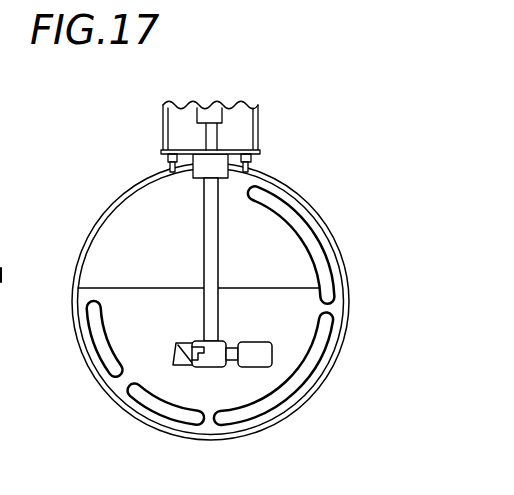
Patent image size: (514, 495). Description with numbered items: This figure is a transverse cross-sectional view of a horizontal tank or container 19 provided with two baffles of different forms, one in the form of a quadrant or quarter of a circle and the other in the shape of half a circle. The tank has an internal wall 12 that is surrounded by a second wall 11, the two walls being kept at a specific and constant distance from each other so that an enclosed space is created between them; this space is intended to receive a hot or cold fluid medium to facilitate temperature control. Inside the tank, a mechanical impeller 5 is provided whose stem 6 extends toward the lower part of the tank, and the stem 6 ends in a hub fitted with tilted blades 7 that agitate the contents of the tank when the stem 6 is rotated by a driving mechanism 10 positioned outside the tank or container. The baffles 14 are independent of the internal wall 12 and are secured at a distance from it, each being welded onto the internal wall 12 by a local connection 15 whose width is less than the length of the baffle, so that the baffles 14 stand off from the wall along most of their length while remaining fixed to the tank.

The mechanical impeller 5 is at (224, 247).
The stem 6 is at (203, 308).
The tilted blades 7 is at (266, 355).
The driving mechanism 10 is at (156, 134).
The second wall 11 is at (118, 199).
The internal wall 12 is at (106, 232).
The baffles 14 is at (82, 326).
The local connection 15 is at (112, 382).
The horizontal tank or container 19 is at (296, 165).